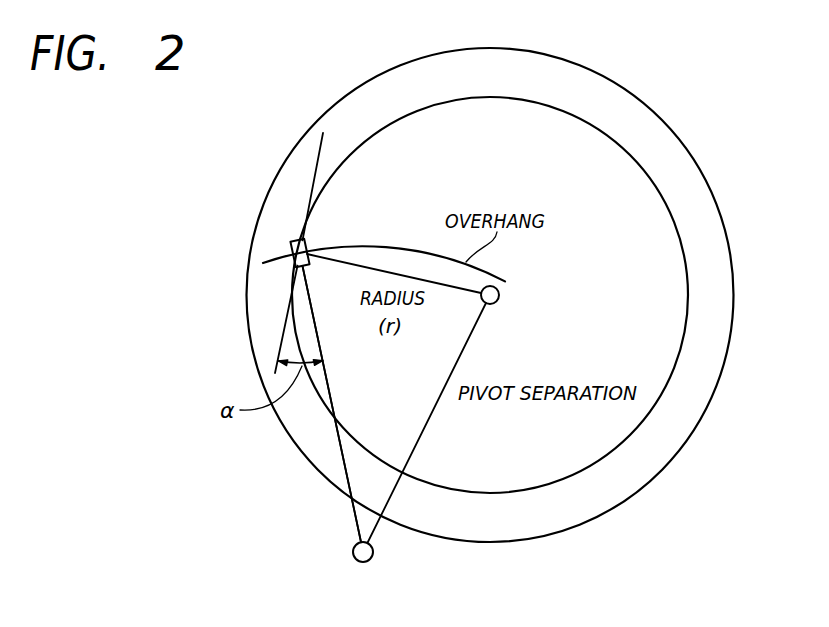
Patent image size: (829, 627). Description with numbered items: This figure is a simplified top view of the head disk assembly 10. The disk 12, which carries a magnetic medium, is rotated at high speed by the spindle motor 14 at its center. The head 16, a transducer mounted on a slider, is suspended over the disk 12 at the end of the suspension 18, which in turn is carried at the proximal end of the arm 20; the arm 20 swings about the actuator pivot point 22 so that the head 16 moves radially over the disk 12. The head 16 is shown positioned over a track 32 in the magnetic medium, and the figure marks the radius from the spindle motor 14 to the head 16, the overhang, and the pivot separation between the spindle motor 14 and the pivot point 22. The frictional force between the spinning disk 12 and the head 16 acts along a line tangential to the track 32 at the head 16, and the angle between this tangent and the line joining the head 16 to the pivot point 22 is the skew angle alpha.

The head disk assembly 10 is at (508, 277).
The disk 12 is at (713, 184).
The spindle motor 14 is at (497, 302).
The head 16 is at (292, 247).
The suspension 18 is at (341, 463).
The arm 20 is at (308, 404).
The pivot point 22 is at (371, 559).
The track 32 is at (647, 420).